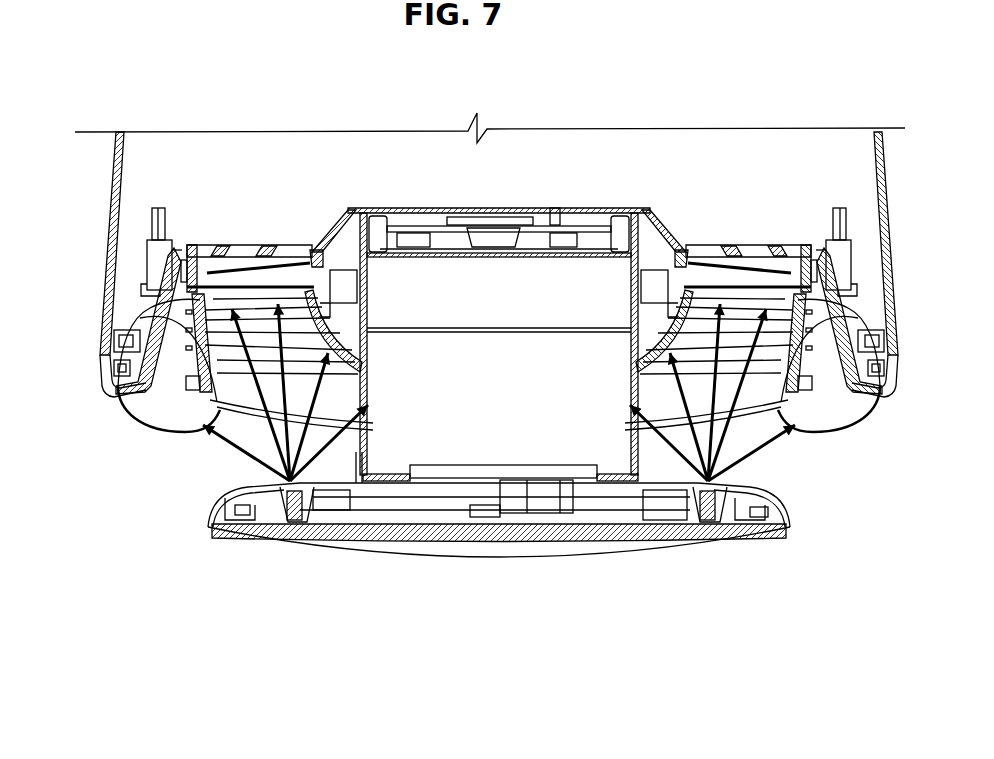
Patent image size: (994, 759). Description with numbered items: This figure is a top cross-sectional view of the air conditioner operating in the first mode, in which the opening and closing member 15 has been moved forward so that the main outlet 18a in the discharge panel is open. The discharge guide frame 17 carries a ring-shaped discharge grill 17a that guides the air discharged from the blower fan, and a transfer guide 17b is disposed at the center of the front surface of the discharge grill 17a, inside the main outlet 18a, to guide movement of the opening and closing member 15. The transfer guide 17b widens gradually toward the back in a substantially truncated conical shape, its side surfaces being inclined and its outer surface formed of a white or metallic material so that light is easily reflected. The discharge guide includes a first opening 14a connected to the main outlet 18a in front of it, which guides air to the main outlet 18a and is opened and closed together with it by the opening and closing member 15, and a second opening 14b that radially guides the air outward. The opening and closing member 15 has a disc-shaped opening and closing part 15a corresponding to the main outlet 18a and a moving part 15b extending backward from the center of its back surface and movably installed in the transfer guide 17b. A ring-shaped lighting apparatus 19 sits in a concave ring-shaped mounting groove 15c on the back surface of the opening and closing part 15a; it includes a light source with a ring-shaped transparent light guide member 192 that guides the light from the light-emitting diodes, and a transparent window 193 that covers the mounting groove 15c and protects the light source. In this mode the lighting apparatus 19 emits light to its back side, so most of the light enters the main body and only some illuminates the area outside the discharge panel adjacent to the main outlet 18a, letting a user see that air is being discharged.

The first opening 14a is at (160, 292).
The second opening 14b is at (258, 322).
The opening and closing member 15 is at (490, 563).
The opening and closing part 15a is at (437, 541).
The moving part 15b is at (360, 455).
The mounting groove 15c is at (291, 528).
The discharge guide frame 17 is at (758, 236).
The discharge grill 17a is at (773, 250).
The transfer guide 17b is at (698, 276).
The main outlet 18a is at (206, 420).
The lighting apparatus 19 is at (708, 526).
The light guide member 192 is at (729, 530).
The transparent window 193 is at (664, 483).